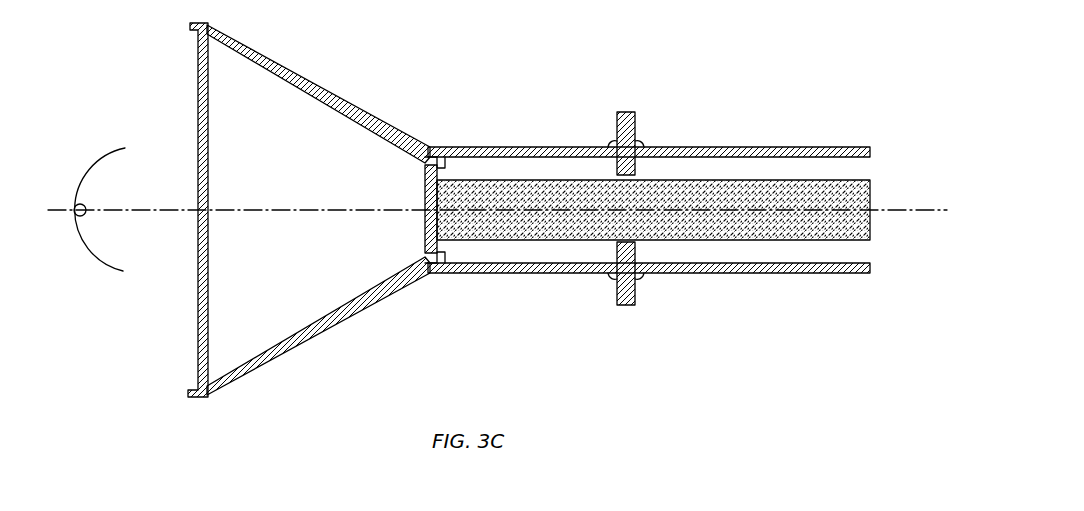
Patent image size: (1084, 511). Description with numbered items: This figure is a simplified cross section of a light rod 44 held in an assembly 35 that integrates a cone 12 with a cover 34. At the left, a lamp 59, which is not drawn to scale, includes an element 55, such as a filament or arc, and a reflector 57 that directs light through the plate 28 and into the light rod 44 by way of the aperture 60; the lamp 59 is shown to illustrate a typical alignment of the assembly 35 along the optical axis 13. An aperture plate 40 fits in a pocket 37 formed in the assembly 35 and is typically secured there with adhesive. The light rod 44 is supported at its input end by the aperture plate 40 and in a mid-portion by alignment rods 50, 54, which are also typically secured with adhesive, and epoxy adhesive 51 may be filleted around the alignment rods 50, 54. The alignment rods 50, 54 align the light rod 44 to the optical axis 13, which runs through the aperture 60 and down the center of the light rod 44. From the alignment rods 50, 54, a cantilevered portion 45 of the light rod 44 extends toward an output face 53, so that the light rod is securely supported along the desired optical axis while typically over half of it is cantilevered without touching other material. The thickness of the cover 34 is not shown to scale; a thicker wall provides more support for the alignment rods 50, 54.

The cone 12 is at (323, 88).
The optical axis 13 is at (925, 208).
The plate 28 is at (207, 185).
The cover 34 is at (495, 147).
The assembly 35 is at (441, 133).
The pocket 37 is at (428, 157).
The aperture plate 40 is at (425, 250).
The light rod 44 is at (503, 190).
The cantilevered portion 45 is at (728, 150).
The alignment rod 50 is at (637, 122).
The epoxy adhesive 51 is at (612, 143).
The output face 53 is at (870, 188).
The alignment rod 54 is at (637, 300).
The element 55 is at (78, 204).
The reflector 57 is at (98, 155).
The lamp 59 is at (120, 118).
The aperture 60 is at (417, 195).